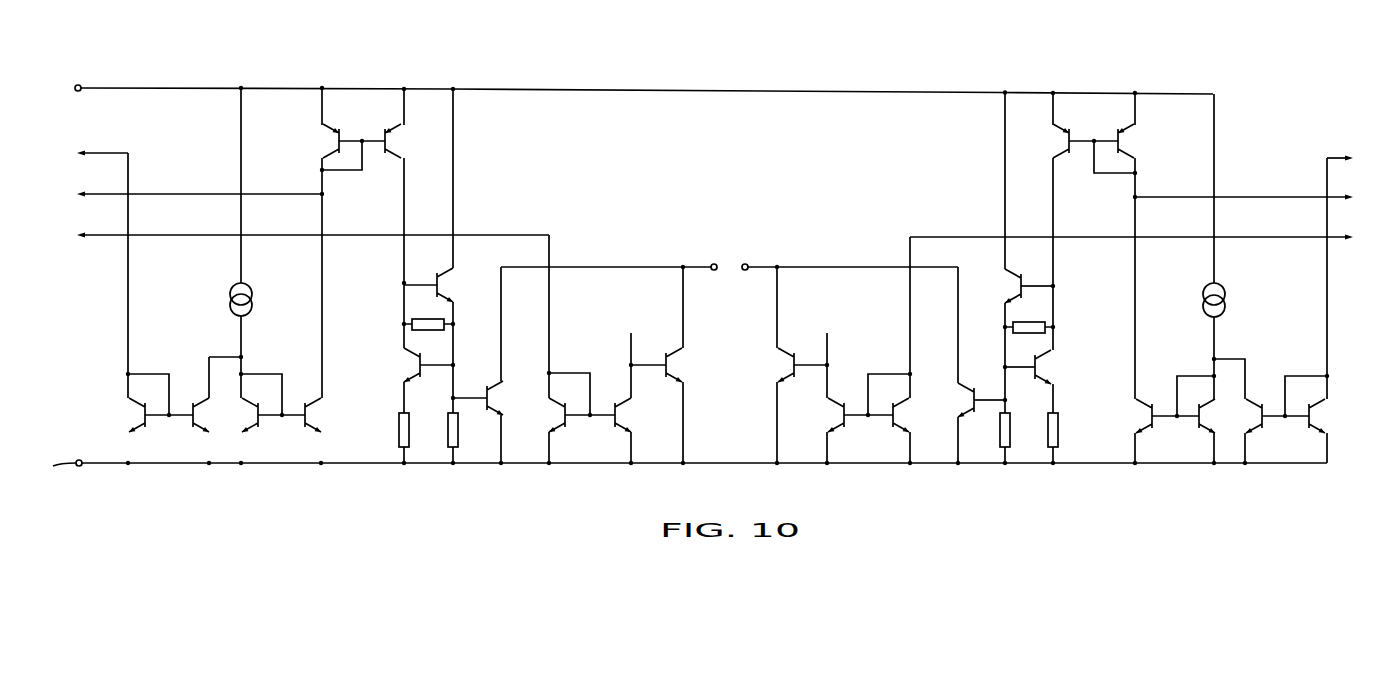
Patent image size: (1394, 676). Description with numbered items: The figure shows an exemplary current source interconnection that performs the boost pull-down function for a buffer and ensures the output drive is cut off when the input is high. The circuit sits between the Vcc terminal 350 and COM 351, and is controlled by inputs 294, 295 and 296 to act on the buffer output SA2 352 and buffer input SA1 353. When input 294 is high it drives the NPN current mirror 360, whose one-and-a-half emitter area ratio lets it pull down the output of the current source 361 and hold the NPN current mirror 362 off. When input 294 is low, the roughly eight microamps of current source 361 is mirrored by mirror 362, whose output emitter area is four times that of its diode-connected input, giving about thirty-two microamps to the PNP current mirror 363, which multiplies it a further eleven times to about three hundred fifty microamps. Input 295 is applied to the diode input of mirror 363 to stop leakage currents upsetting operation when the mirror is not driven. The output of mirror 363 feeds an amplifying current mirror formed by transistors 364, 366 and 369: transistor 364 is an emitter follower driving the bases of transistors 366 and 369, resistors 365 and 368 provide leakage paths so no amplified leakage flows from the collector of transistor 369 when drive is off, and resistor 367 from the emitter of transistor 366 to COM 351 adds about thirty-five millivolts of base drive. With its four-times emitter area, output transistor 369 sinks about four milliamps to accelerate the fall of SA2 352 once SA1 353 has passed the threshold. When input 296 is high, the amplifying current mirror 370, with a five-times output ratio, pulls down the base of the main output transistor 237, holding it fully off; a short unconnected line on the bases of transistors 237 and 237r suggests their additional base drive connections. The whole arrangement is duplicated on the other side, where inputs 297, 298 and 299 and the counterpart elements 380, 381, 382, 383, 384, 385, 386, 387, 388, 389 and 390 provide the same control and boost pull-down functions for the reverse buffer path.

The Vcc power supply terminal 350 is at (72, 88).
The COM 351 is at (73, 472).
The input 294 is at (74, 153).
The input 295 is at (70, 193).
The input 296 is at (72, 230).
The input 297 is at (1362, 156).
The input 298 is at (1364, 194).
The input 299 is at (1345, 248).
The buffer output SA2 352 is at (712, 263).
The buffer input SA1 353 is at (762, 255).
The NPN current mirror 360 is at (190, 428).
The current source 361 is at (228, 300).
The NPN current mirror 362 is at (300, 428).
The PNP current mirror 363 is at (382, 130).
The transistor 364 is at (445, 285).
The resistor 365 is at (410, 322).
The transistor 366 is at (407, 367).
The resistor 367 is at (400, 432).
The resistor 368 is at (460, 428).
The output transistor 369 is at (520, 395).
The amplifying current mirror 370 is at (610, 428).
The output transistor 237 is at (673, 358).
The transistor 237r is at (783, 378).
The transistor pair 380 is at (1302, 429).
The current source 381 is at (1246, 305).
The transistor pair 382 is at (1196, 429).
The PNP transistor pair 383 is at (1116, 130).
The transistor 384 is at (1013, 287).
The resistor 385 is at (1040, 334).
The transistor 386 is at (1050, 368).
The resistor 387 is at (1060, 431).
The resistor 388 is at (998, 432).
The transistor 389 is at (966, 389).
The transistor pair 390 is at (888, 428).